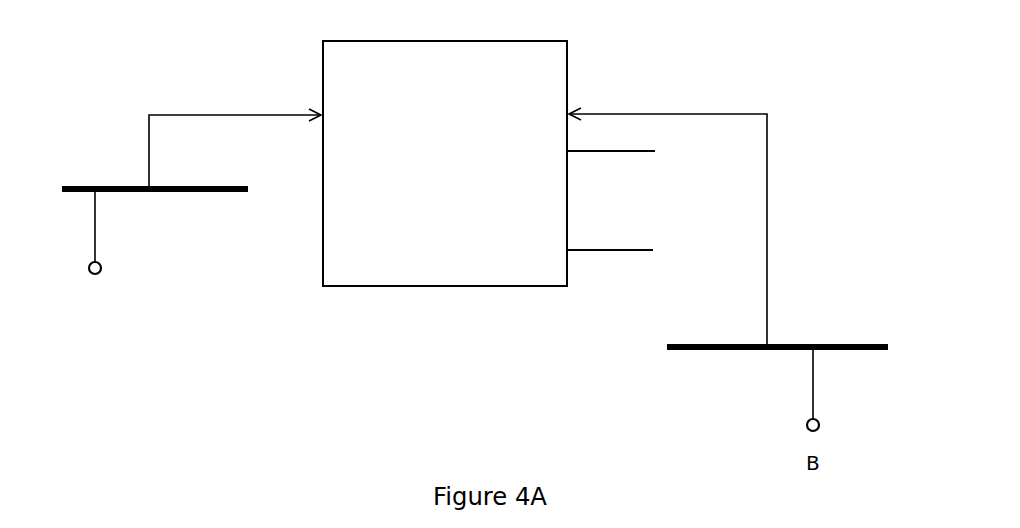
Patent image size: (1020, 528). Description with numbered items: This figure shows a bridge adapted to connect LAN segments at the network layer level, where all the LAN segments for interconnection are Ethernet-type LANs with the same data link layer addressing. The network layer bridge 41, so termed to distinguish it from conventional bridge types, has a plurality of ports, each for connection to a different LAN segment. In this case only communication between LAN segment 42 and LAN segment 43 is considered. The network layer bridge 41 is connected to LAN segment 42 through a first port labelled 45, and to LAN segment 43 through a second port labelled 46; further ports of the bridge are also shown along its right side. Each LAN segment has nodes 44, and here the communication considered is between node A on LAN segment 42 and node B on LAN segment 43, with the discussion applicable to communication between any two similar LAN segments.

The network layer bridge 41 is at (556, 63).
The LAN segment 42 is at (111, 186).
The LAN segment 43 is at (792, 344).
The nodes 44 is at (103, 269).
The port P0 45 is at (320, 112).
The port P1 46 is at (569, 113).